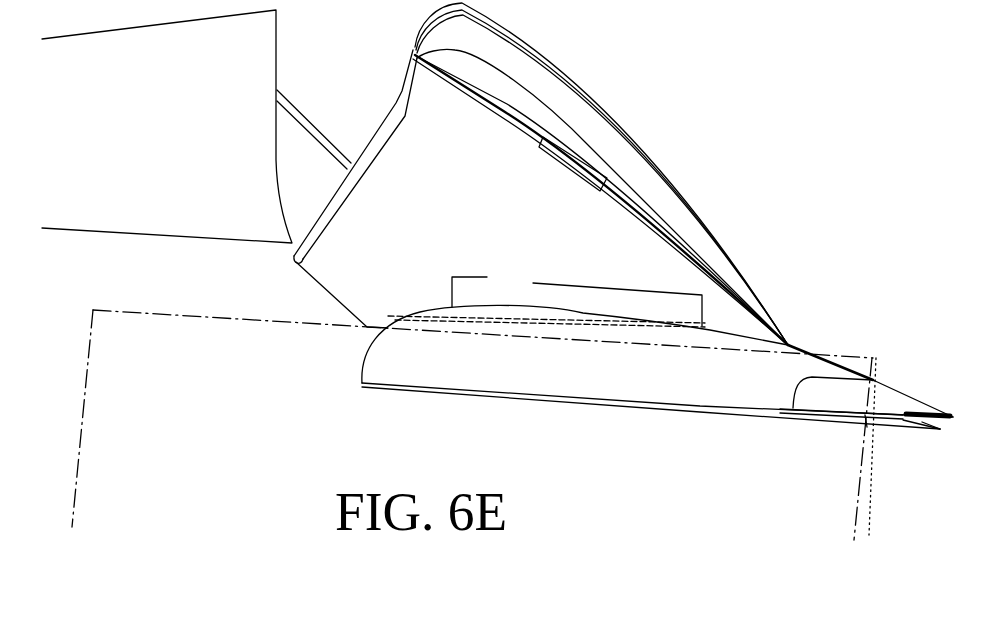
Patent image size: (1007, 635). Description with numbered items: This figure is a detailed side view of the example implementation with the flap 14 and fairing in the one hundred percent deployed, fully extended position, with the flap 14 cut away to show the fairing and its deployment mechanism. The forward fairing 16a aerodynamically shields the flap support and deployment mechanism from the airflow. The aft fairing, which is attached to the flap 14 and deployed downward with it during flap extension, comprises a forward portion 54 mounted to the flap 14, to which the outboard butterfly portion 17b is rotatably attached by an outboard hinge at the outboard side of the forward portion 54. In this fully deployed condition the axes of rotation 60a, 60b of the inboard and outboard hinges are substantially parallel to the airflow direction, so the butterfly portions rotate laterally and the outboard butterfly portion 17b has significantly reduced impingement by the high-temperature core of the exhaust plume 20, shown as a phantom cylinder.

The flap 14 is at (617, 107).
The forward fairing 16a is at (197, 200).
The outboard butterfly portion 17b is at (738, 378).
The core of the exhaust plume 20 is at (265, 318).
The forward portion 54 is at (355, 246).
The axis of rotation 60a is at (383, 313).
The axis of rotation 60b is at (392, 313).